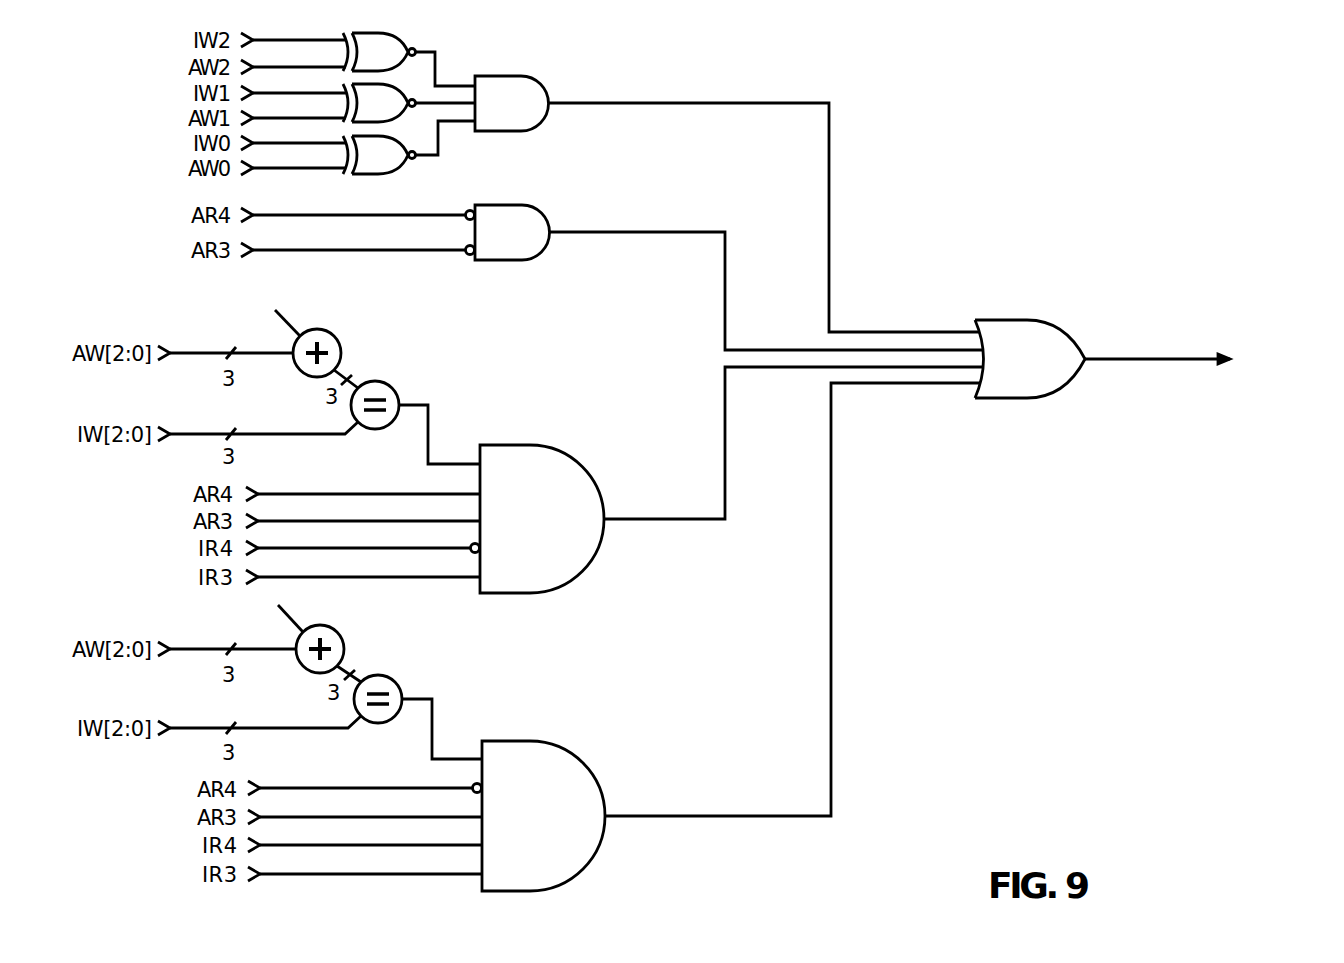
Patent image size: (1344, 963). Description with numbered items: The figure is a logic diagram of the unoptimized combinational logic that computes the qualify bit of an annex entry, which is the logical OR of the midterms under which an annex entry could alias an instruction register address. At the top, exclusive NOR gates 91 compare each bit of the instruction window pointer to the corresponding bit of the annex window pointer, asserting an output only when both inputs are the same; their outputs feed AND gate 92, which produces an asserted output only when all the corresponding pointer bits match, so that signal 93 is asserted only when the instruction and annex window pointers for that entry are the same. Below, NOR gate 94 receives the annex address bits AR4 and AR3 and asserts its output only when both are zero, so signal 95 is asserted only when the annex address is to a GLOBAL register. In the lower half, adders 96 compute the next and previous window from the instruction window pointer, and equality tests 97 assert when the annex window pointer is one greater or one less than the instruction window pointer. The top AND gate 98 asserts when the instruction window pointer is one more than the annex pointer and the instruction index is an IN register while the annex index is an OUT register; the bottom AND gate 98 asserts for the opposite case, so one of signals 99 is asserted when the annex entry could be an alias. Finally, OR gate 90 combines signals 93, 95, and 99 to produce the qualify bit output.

The OR gate 90 is at (990, 318).
The exclusive NOR gates 91 is at (398, 42).
The AND gate 92 is at (512, 75).
The signal 93 is at (830, 200).
The NOR gate 94 is at (522, 203).
The signal 95 is at (726, 292).
The adders 96 is at (332, 333).
The equality tests 97 is at (388, 383).
The AND gate 98 is at (505, 443).
The signals 99 is at (727, 452).